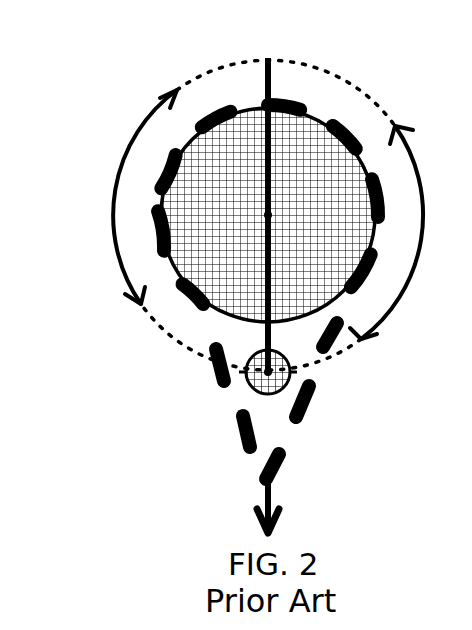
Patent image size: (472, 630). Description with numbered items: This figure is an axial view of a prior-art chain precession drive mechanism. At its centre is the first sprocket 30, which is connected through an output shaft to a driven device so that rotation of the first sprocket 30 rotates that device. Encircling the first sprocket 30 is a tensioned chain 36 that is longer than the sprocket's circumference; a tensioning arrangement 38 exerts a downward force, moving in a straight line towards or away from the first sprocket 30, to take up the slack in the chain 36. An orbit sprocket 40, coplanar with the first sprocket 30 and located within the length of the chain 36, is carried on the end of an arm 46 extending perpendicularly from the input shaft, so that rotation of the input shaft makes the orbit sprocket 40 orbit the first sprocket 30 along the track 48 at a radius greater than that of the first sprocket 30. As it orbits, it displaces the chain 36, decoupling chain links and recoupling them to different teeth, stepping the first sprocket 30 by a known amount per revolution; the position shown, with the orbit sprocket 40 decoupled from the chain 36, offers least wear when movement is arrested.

The first sprocket 30 is at (230, 152).
The tensioned chain 36 is at (277, 97).
The tensioning arrangement 38 is at (277, 481).
The orbit sprocket 40 is at (297, 372).
The arm 46 is at (262, 338).
The track of the orbit sprocket 48 is at (153, 330).